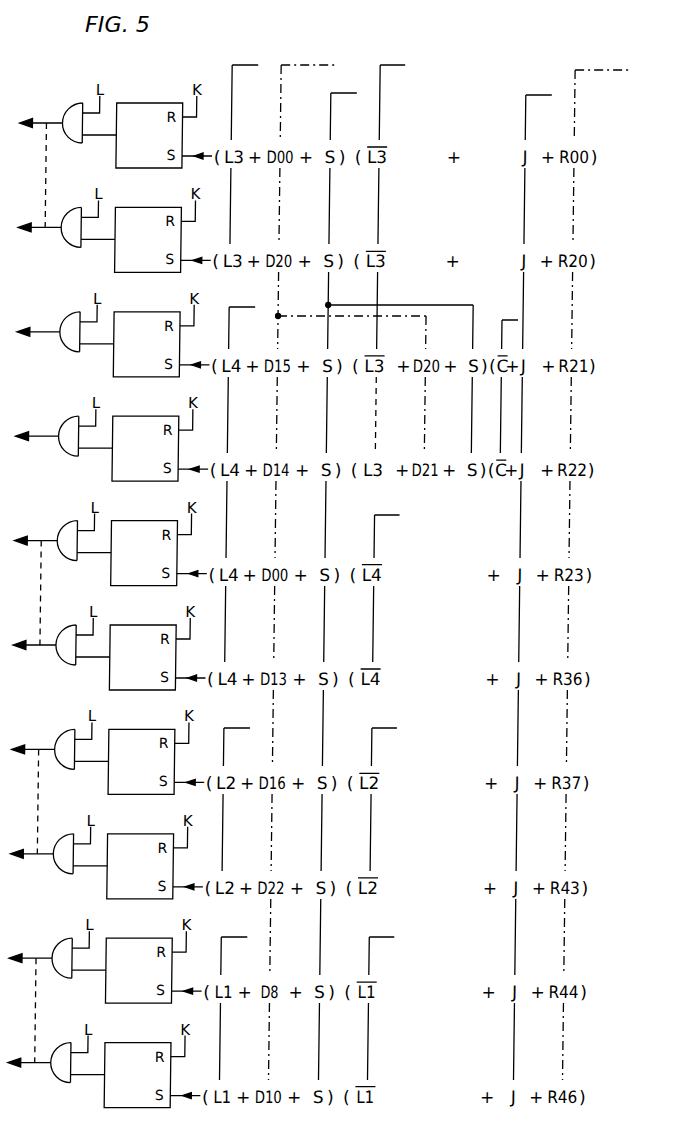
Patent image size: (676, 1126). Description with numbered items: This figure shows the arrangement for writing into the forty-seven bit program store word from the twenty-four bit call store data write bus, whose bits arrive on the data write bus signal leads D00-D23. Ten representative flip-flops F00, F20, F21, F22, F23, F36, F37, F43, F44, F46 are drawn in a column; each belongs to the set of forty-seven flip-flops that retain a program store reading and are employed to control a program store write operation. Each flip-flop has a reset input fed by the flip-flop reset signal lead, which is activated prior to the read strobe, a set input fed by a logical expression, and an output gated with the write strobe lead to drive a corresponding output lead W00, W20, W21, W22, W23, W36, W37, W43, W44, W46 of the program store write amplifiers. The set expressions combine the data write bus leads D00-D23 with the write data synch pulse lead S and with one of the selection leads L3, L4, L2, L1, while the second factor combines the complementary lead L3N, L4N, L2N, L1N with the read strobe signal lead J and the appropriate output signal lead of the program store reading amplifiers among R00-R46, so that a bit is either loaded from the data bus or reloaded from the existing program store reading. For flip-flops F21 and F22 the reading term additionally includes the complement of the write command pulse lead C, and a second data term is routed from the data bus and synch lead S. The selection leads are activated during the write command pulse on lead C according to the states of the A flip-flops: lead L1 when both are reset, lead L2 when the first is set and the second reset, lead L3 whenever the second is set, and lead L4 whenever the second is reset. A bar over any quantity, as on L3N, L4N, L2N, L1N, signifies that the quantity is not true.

The flip-flop F00 is at (116, 124).
The flip-flop F20 is at (115, 228).
The flip-flop F21 is at (113, 333).
The flip-flop F22 is at (112, 437).
The flip-flop F23 is at (111, 542).
The flip-flop F36 is at (109, 646).
The flip-flop F37 is at (108, 750).
The flip-flop F43 is at (107, 855).
The flip-flop F44 is at (105, 959).
The flip-flop F46 is at (104, 1064).
The program store write amplifier output lead W00 is at (33, 164).
The program store write amplifier output lead W20 is at (32, 239).
The program store write amplifier output lead W21 is at (31, 320).
The program store write amplifier output lead W22 is at (30, 424).
The program store write amplifier output lead W23 is at (28, 582).
The program store write amplifier output lead W36 is at (27, 657).
The program store write amplifier output lead W37 is at (25, 790).
The program store write amplifier output lead W43 is at (24, 866).
The program store write amplifier output lead W44 is at (23, 999).
The program store write amplifier output lead W46 is at (21, 1075).
The signal lead L3 is at (244, 144).
The signal lead L4 is at (240, 473).
The signal lead L2 is at (236, 789).
The signal lead L1 is at (234, 998).
The inverted signal lead L3 L3N is at (383, 45).
The inverted signal lead L4 L4N is at (383, 494).
The inverted signal lead L2 L2N is at (383, 707).
The inverted signal lead L1 L1N is at (383, 916).
The data write bus signal leads D00-D23 is at (347, 562).
The write data synch pulse lead S is at (396, 576).
The write command pulse lead C is at (509, 376).
The read strobe signal lead J is at (533, 577).
The program store reading amplifier output leads R00-R46 is at (597, 563).